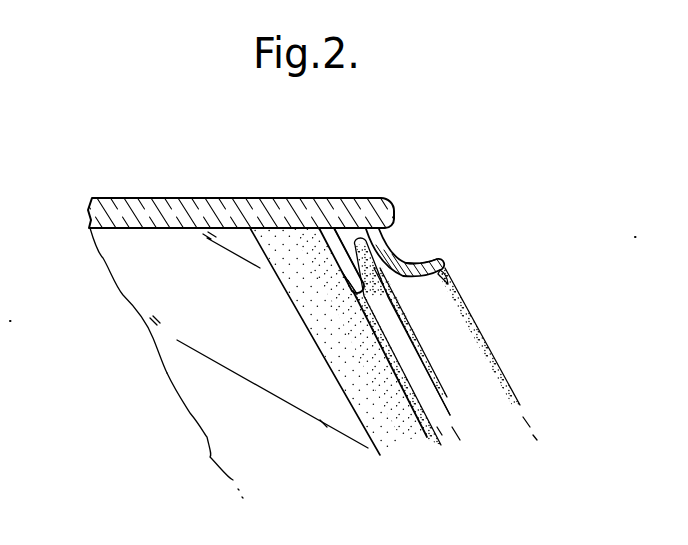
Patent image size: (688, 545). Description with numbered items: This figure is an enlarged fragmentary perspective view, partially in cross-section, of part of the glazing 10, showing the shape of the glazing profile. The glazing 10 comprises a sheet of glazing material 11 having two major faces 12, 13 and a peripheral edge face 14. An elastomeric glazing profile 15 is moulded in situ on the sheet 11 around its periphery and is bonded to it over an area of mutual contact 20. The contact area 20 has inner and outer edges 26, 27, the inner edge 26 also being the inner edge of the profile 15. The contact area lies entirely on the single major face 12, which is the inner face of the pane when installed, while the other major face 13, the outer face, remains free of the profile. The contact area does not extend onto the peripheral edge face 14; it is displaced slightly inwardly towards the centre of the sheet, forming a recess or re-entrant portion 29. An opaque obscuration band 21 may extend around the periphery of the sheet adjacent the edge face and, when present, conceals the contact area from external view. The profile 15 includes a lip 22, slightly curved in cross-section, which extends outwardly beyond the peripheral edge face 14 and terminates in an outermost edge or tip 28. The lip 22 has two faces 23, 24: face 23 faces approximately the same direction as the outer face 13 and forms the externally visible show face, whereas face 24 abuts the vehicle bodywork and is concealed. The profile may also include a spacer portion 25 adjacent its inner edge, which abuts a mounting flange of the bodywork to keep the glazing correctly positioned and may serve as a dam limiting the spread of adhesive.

The glazing 10 is at (263, 153).
The sheet of glazing material 11 is at (235, 415).
The major face 12 is at (138, 278).
The major face 13 is at (128, 198).
The peripheral edge face 14 is at (398, 236).
The elastomeric glazing profile 15 is at (441, 398).
The area of mutual contact 20 is at (342, 228).
The opaque band 21 is at (273, 257).
The lip 22 is at (443, 265).
The lip face 23 is at (437, 255).
The lip face 24 is at (438, 311).
The spacer portion 25 is at (340, 268).
The inner edge 26 is at (306, 228).
The outer edge 27 is at (386, 216).
The outermost edge or tip 28 is at (480, 343).
The recess or re-entrant portion 29 is at (412, 253).